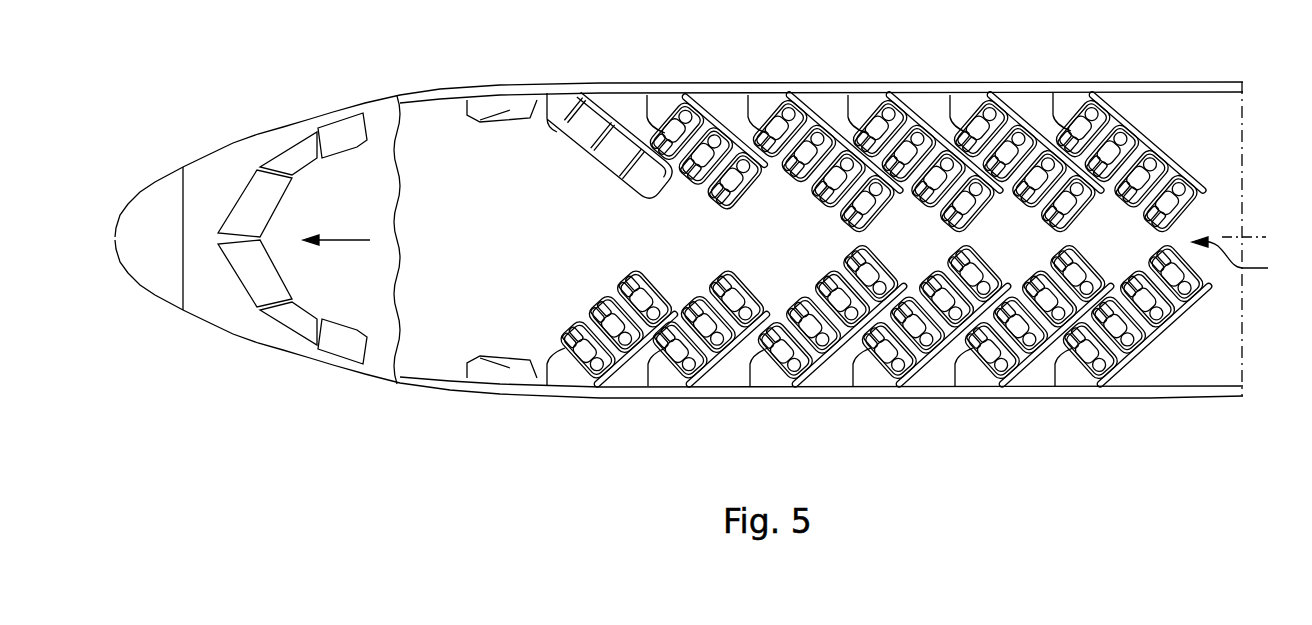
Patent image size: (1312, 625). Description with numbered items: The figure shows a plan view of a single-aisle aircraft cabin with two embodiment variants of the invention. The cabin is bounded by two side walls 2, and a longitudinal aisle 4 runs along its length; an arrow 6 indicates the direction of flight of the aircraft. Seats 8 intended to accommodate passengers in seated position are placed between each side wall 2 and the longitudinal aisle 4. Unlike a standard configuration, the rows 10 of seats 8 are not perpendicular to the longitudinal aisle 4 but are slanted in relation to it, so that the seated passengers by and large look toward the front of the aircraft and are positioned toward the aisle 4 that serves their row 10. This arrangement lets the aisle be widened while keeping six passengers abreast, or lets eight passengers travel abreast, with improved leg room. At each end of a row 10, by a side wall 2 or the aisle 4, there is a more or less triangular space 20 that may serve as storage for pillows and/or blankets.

The side wall 2 is at (922, 88).
The longitudinal aisle 4 is at (1241, 260).
The arrow 6 is at (343, 241).
The seat 8 is at (640, 178).
The row 10 is at (758, 287).
The space 20 is at (762, 110).